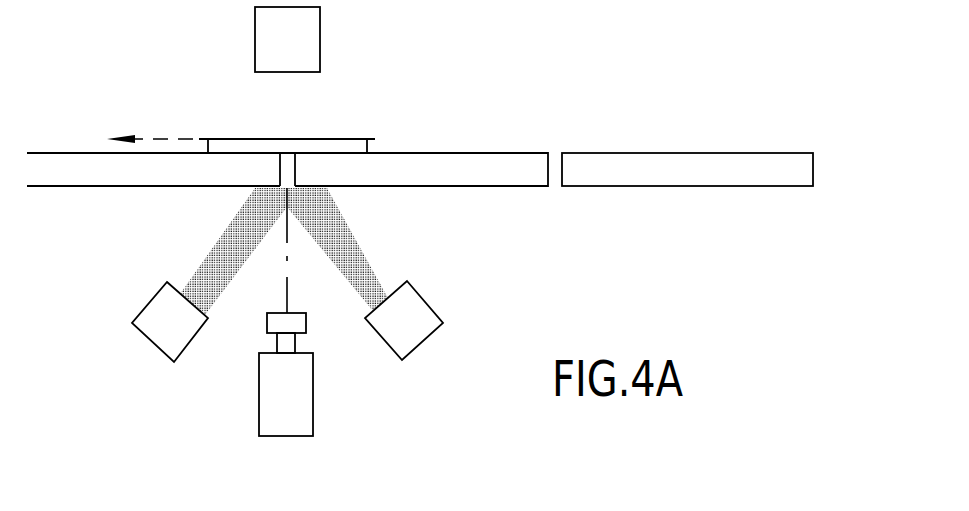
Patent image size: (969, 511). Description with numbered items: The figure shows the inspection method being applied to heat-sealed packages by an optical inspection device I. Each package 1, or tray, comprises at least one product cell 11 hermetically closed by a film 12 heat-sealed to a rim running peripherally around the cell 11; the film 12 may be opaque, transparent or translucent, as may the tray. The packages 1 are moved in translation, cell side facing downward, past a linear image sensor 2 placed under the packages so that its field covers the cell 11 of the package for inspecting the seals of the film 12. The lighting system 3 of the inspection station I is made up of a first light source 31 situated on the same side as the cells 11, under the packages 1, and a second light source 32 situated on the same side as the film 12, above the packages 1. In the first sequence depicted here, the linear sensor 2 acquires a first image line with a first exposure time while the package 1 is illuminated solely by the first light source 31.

The package 1 is at (341, 132).
The product cell 11 is at (263, 147).
The film 12 is at (227, 136).
The linear image sensor 2 is at (310, 412).
The lighting system 3 is at (92, 320).
The first light source 31 is at (156, 306).
The second light source 32 is at (310, 47).
The inspection device I is at (150, 403).